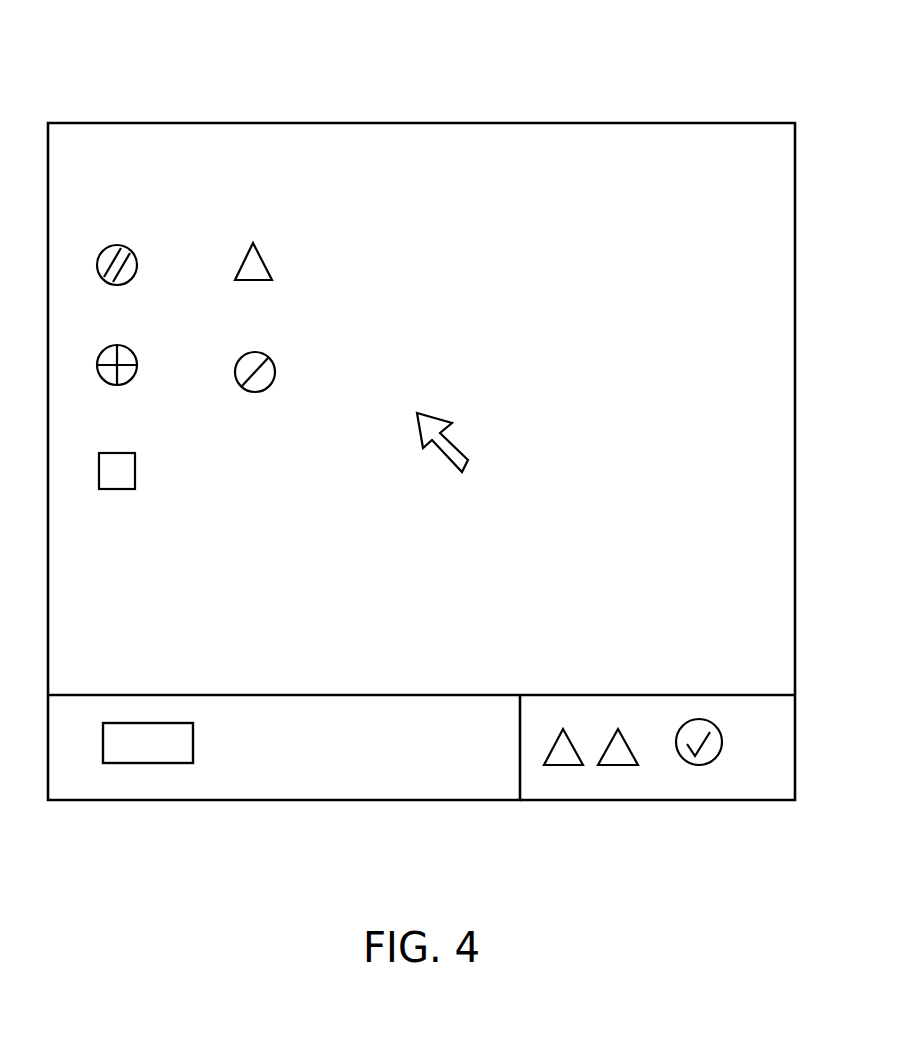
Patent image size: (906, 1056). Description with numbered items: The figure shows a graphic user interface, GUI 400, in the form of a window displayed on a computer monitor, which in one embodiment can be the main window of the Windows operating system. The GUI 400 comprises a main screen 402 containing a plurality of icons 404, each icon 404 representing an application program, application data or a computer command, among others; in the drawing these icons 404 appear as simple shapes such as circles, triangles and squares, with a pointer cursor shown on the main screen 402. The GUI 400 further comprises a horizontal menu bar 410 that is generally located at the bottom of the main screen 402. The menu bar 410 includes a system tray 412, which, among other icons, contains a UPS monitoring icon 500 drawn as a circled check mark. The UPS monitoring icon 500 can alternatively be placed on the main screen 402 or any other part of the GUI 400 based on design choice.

The GUI 400 is at (250, 44).
The main screen 402 is at (622, 188).
The icons 404 is at (241, 253).
The horizontal menu bar 410 is at (316, 804).
The system tray 412 is at (585, 804).
The UPS monitoring icon 500 is at (706, 716).